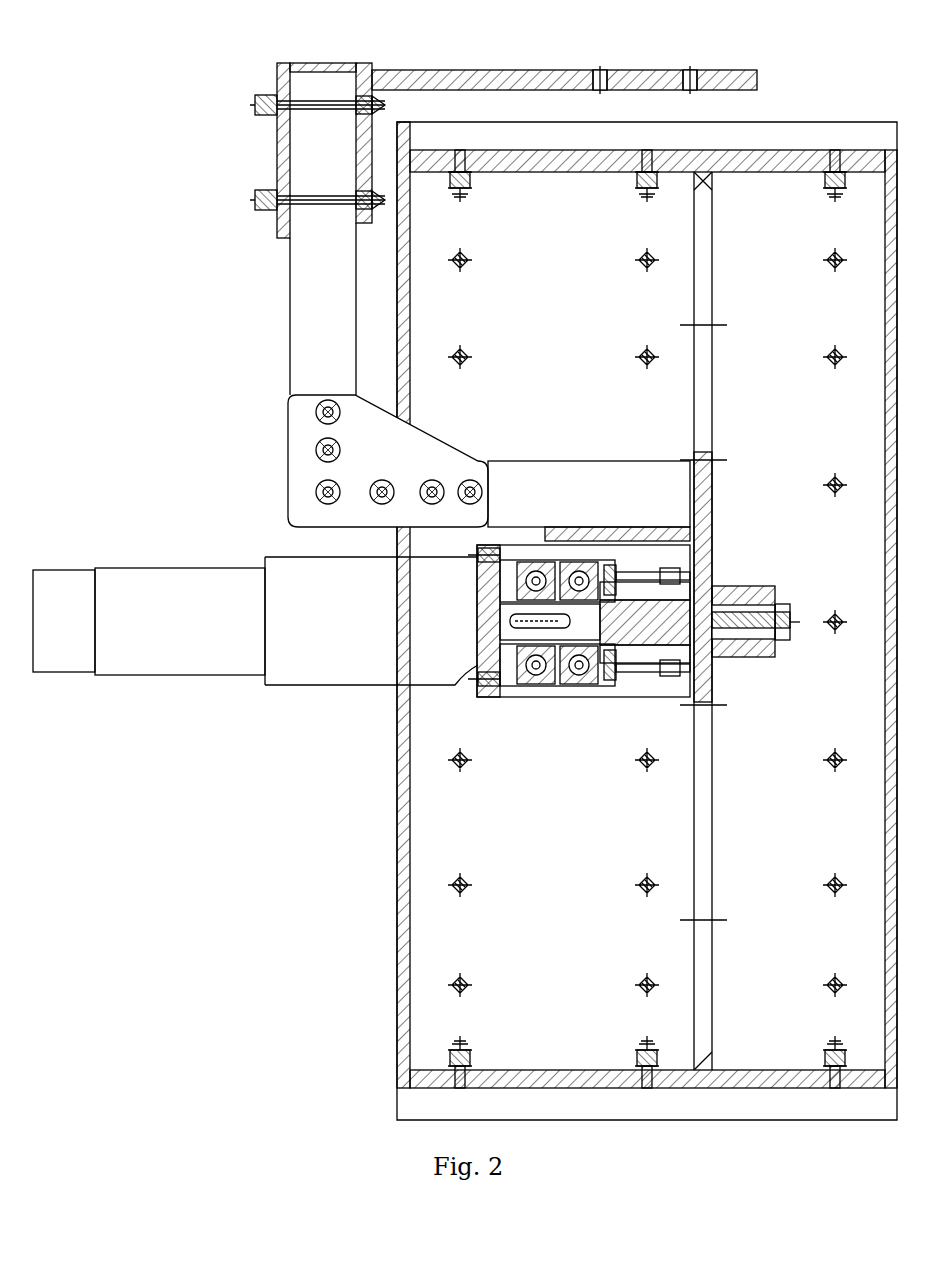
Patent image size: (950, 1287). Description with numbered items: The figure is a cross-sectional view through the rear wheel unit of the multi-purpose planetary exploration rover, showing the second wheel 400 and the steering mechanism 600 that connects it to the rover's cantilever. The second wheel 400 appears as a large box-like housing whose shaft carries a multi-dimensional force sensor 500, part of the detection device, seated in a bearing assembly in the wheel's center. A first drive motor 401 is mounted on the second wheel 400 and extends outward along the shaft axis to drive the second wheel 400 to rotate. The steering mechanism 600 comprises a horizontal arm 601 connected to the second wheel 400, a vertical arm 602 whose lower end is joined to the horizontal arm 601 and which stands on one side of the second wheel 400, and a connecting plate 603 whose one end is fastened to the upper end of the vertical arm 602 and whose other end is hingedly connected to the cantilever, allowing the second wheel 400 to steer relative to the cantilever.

The second wheel 400 is at (406, 947).
The first drive motor 401 is at (228, 569).
The multi-dimensional force sensor 500 is at (635, 697).
The steering mechanism 600 is at (150, 186).
The horizontal arm 601 is at (645, 470).
The vertical arm 602 is at (298, 341).
The connecting plate 603 is at (478, 78).